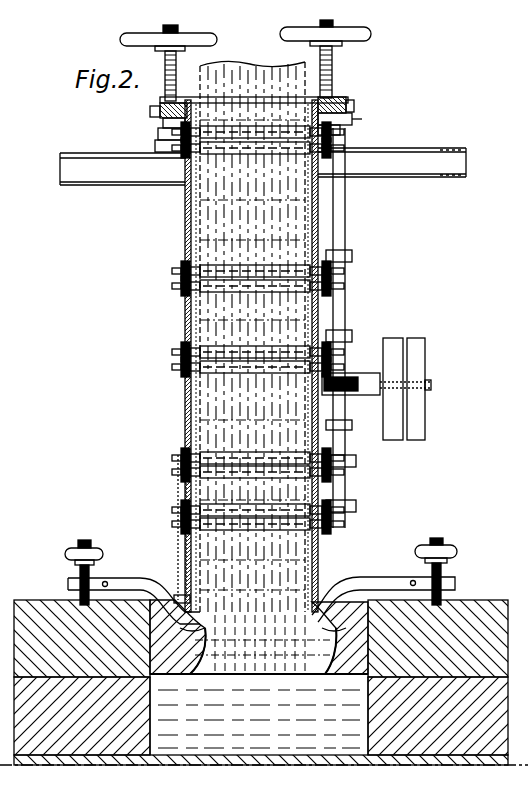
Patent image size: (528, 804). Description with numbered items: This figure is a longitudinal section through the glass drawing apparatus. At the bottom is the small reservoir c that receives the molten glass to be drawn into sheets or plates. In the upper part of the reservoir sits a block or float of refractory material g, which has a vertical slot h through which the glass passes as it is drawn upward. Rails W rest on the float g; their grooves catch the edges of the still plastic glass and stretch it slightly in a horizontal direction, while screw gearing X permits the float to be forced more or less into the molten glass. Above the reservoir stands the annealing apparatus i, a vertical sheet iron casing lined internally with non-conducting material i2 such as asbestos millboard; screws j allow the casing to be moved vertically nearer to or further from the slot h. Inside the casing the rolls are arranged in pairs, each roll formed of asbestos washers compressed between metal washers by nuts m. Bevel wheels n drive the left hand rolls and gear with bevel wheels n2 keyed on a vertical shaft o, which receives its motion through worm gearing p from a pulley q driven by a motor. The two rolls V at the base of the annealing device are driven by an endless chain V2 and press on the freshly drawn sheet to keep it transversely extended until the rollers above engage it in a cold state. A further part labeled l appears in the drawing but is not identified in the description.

The rolls V is at (298, 594).
The annealing apparatus i is at (188, 240).
The roller l is at (185, 388).
The non-conducting material i2 is at (187, 347).
The nuts m is at (348, 470).
The vertical shaft o is at (338, 303).
The worm gearing p is at (352, 384).
The pulley q is at (395, 346).
The bevel wheels n2 is at (346, 461).
The bevel wheels n is at (345, 480).
The screws j is at (339, 71).
The endless chain V2 is at (172, 561).
The rails W is at (122, 584).
The screw gearing X is at (446, 560).
The block or float of refractory material g is at (259, 637).
The vertical slot h is at (259, 644).
The reservoir c is at (259, 716).